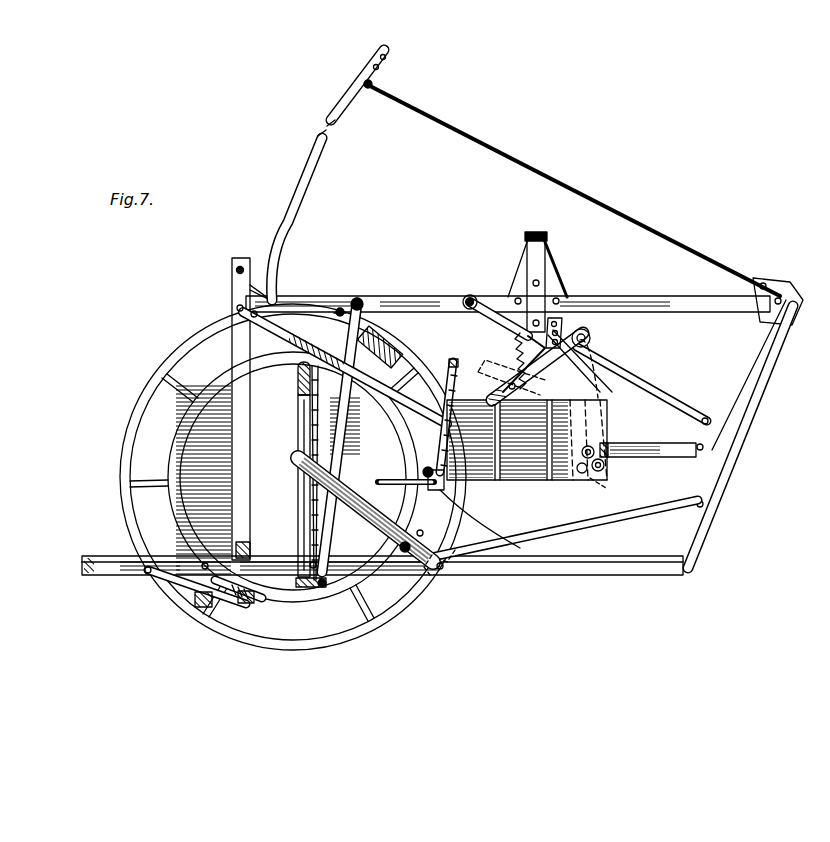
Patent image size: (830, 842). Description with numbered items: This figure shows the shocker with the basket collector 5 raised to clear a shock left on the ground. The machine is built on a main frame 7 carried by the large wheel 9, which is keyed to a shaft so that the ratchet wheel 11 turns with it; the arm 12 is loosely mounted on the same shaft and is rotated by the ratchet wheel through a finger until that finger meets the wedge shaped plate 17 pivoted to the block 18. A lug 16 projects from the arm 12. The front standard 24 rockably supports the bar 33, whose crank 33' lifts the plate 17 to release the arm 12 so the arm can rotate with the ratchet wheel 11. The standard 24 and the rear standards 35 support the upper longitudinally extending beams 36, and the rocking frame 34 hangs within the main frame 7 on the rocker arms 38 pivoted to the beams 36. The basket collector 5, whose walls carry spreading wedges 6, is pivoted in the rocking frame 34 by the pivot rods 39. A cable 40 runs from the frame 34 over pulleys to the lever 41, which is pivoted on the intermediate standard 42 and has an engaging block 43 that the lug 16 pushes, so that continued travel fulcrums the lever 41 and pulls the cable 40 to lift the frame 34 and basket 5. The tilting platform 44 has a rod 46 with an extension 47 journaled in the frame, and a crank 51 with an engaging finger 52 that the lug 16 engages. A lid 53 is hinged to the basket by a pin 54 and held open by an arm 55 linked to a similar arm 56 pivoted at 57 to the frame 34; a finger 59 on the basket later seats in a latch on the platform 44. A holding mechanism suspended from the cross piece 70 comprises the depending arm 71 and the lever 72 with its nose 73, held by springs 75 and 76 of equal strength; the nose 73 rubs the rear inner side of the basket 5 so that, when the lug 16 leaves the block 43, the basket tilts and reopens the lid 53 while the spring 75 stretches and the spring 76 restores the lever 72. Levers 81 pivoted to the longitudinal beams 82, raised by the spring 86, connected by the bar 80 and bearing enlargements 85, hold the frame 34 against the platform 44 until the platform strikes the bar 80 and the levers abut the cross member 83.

The basket collector 5 is at (598, 398).
The spreading wedges 6 is at (548, 441).
The main frame 7 is at (80, 566).
The wheel 9 is at (122, 470).
The ratchet wheel 11 is at (180, 430).
The arm 12 is at (400, 498).
The lug 16 is at (400, 547).
The wedge shaped plate 17 is at (339, 307).
The block 18 is at (390, 330).
The standard 24 is at (232, 300).
The bar 33 is at (226, 409).
The crank 33' is at (244, 266).
The rocking frame 34 is at (659, 458).
The rear standards 35 is at (745, 408).
The upper longitudinally extending beams 36 is at (665, 296).
The rocker arms 38 is at (398, 400).
The pivot rods 39 is at (596, 475).
The cable 40 is at (600, 202).
The lever 41 is at (300, 170).
The intermediate standard 42 is at (360, 300).
The engaging block 43 is at (460, 545).
The tilting platform 44 is at (298, 404).
The rod 46 is at (298, 532).
The extension 47 is at (325, 588).
The crank 51 is at (330, 400).
The engaging finger 52 is at (337, 437).
The lid 53 is at (448, 392).
The pin 54 is at (436, 488).
The arm 55 is at (468, 304).
The arm 56 is at (570, 380).
The pivot 57 is at (597, 448).
The finger 59 is at (384, 481).
The cross piece 70 is at (547, 237).
The depending arm 71 is at (500, 312).
The lever 72 is at (544, 376).
The nose 73 is at (591, 337).
The spring 75 is at (508, 354).
The spring 76 is at (560, 330).
The bar 80 is at (226, 594).
The levers 81 is at (165, 583).
The longitudinal beams 82 is at (606, 574).
The cross member 83 is at (200, 604).
The enlargement 85 is at (243, 600).
The spring 86 is at (238, 550).